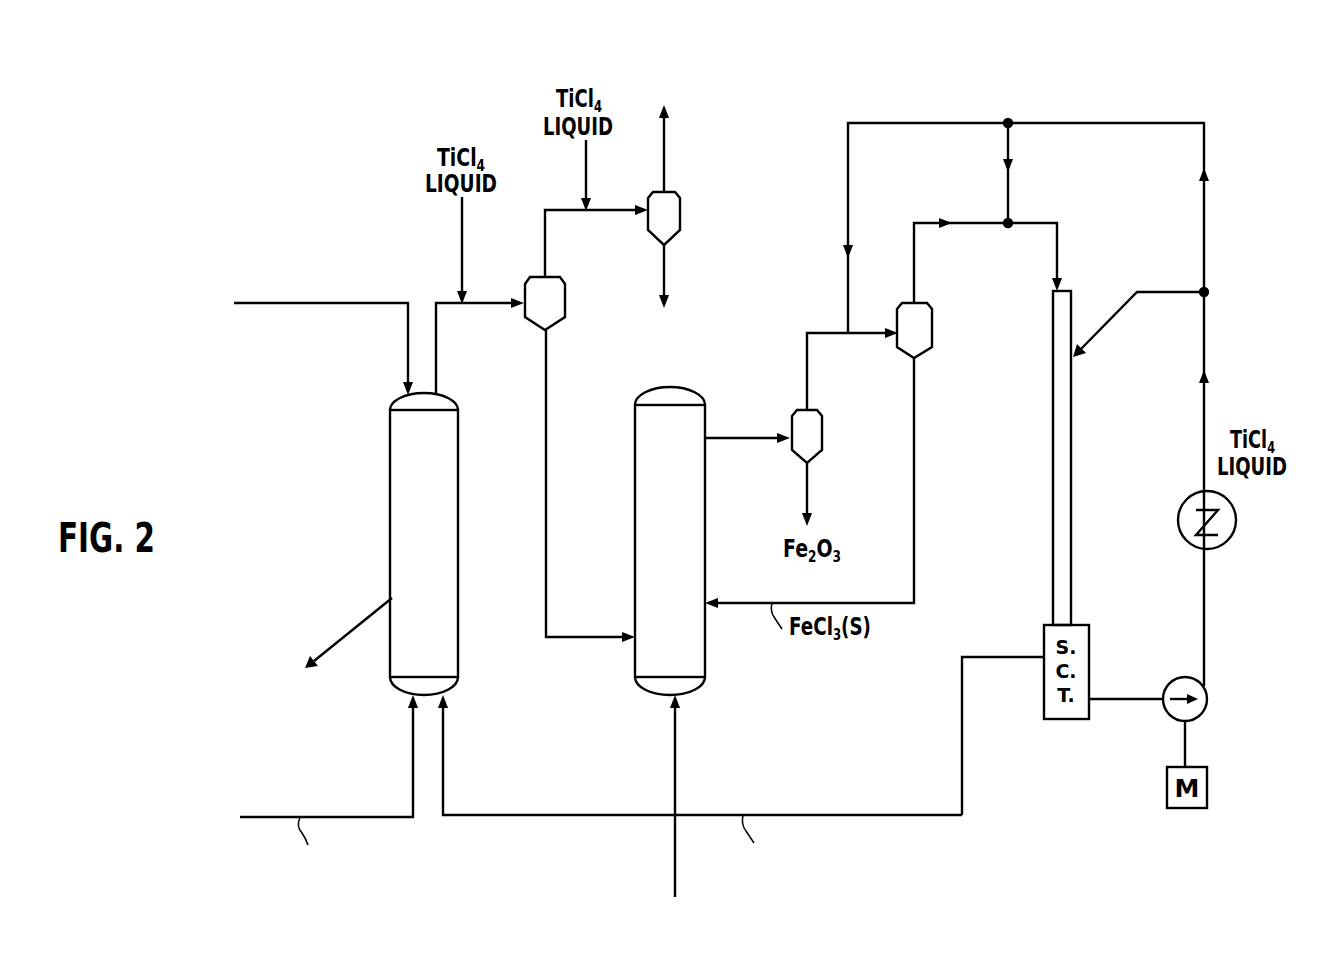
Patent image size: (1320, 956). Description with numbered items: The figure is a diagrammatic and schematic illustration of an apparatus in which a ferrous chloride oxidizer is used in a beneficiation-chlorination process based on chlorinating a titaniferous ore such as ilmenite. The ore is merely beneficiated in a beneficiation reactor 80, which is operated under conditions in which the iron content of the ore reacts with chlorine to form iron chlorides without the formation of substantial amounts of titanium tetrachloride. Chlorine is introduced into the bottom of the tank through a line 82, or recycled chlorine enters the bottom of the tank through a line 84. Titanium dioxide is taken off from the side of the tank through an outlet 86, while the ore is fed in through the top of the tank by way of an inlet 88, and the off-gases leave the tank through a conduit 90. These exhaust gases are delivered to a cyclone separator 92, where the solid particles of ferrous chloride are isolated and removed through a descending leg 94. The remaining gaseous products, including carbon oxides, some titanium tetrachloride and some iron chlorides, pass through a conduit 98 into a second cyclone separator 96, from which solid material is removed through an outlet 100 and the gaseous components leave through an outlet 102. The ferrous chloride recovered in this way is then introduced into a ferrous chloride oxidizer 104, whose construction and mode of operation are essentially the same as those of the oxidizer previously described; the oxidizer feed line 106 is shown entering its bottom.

The beneficiation reactor 80 is at (458, 537).
The line 82 is at (413, 761).
The line 84 is at (444, 751).
The outlet 86 is at (381, 609).
The inlet 88 is at (407, 342).
The conduit 90 is at (437, 343).
The cyclone separator 92 is at (563, 301).
The descending leg 94 is at (547, 446).
The cyclone separator 96 is at (680, 214).
The conduit 98 is at (551, 212).
The outlet 100 is at (665, 268).
The outlet 102 is at (665, 155).
The ferrous chloride oxidizer 104 is at (705, 456).
The oxidizer feed line 106 is at (676, 755).